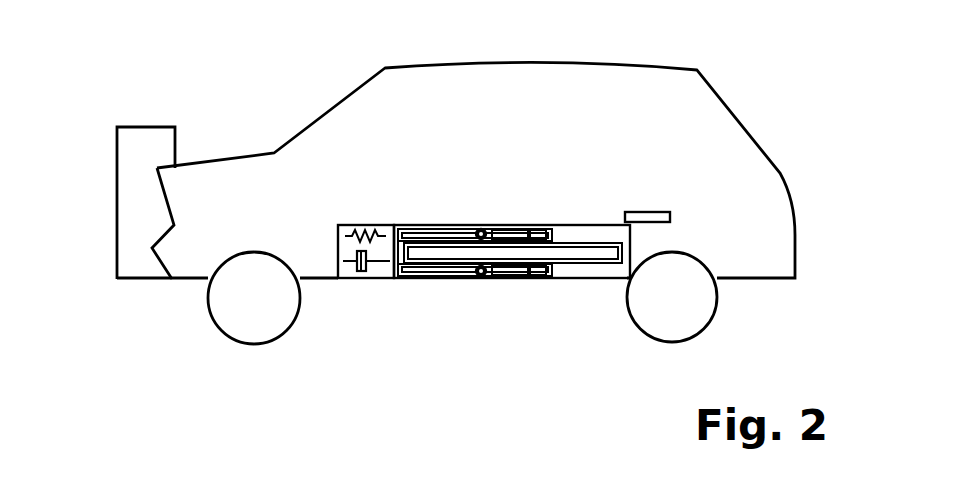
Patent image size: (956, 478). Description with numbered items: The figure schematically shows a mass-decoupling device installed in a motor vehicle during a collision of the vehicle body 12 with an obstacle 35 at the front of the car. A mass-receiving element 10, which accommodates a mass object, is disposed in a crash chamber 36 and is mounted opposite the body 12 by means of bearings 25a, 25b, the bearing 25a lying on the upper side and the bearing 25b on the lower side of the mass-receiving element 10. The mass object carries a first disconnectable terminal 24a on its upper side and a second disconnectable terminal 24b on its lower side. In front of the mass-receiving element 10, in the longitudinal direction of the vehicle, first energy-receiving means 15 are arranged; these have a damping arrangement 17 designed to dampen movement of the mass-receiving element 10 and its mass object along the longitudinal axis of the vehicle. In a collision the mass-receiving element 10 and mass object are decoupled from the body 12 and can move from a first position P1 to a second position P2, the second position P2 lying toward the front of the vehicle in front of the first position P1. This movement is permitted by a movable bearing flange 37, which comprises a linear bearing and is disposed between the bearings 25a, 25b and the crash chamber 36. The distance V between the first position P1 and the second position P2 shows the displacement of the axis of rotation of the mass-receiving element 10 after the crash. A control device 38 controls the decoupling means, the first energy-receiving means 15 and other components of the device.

The mass-receiving element 10 is at (605, 280).
The body 12 is at (343, 100).
The first energy-receiving means 15 is at (328, 250).
The damping arrangement 17 is at (356, 236).
The first disconnectable terminal 24a is at (548, 229).
The second disconnectable terminal 24b is at (545, 280).
The bearing 25a is at (538, 229).
The bearing 25b is at (540, 280).
The obstacle 35 is at (142, 140).
The crash chamber 36 is at (378, 280).
The movable bearing flange 37 is at (420, 280).
The control device 38 is at (652, 212).
The first position P1 is at (480, 292).
The second position P2 is at (478, 292).
The distance V is at (478, 295).